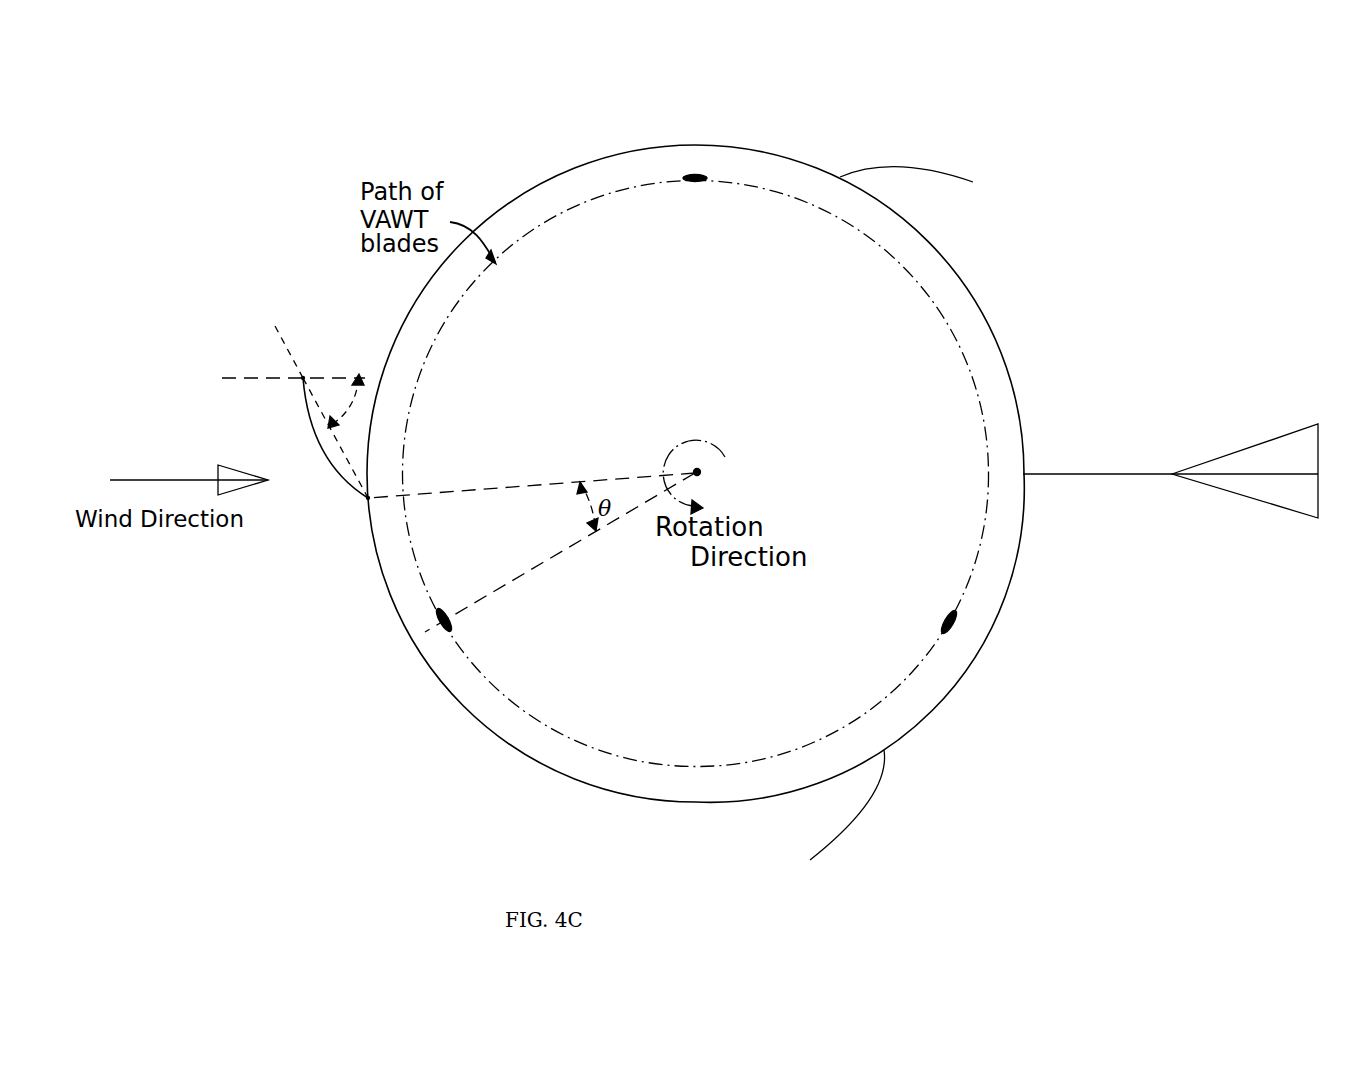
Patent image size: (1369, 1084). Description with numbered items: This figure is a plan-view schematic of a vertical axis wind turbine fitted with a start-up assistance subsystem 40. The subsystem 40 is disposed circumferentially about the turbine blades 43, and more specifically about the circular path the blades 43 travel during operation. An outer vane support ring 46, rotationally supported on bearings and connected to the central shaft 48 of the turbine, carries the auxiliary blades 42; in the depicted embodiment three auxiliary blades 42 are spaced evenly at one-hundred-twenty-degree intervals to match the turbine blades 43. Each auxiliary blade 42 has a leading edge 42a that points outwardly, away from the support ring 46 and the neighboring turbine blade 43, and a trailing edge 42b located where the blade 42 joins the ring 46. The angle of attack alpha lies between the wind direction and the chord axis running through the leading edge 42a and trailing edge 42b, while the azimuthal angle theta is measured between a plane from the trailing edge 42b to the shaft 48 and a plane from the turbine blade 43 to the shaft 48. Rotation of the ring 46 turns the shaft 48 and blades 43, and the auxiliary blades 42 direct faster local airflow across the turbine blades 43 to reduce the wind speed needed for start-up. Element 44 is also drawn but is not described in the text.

The start-up assistance subsystem 40 is at (238, 238).
The auxiliary blade 42 is at (323, 448).
The leading edge 42a is at (303, 378).
The trailing edge 42b is at (367, 500).
The turbine blade 43 is at (693, 176).
The tail vane 44 is at (1278, 437).
The outer vane support ring 46 is at (1000, 346).
The central shaft 48 is at (702, 472).